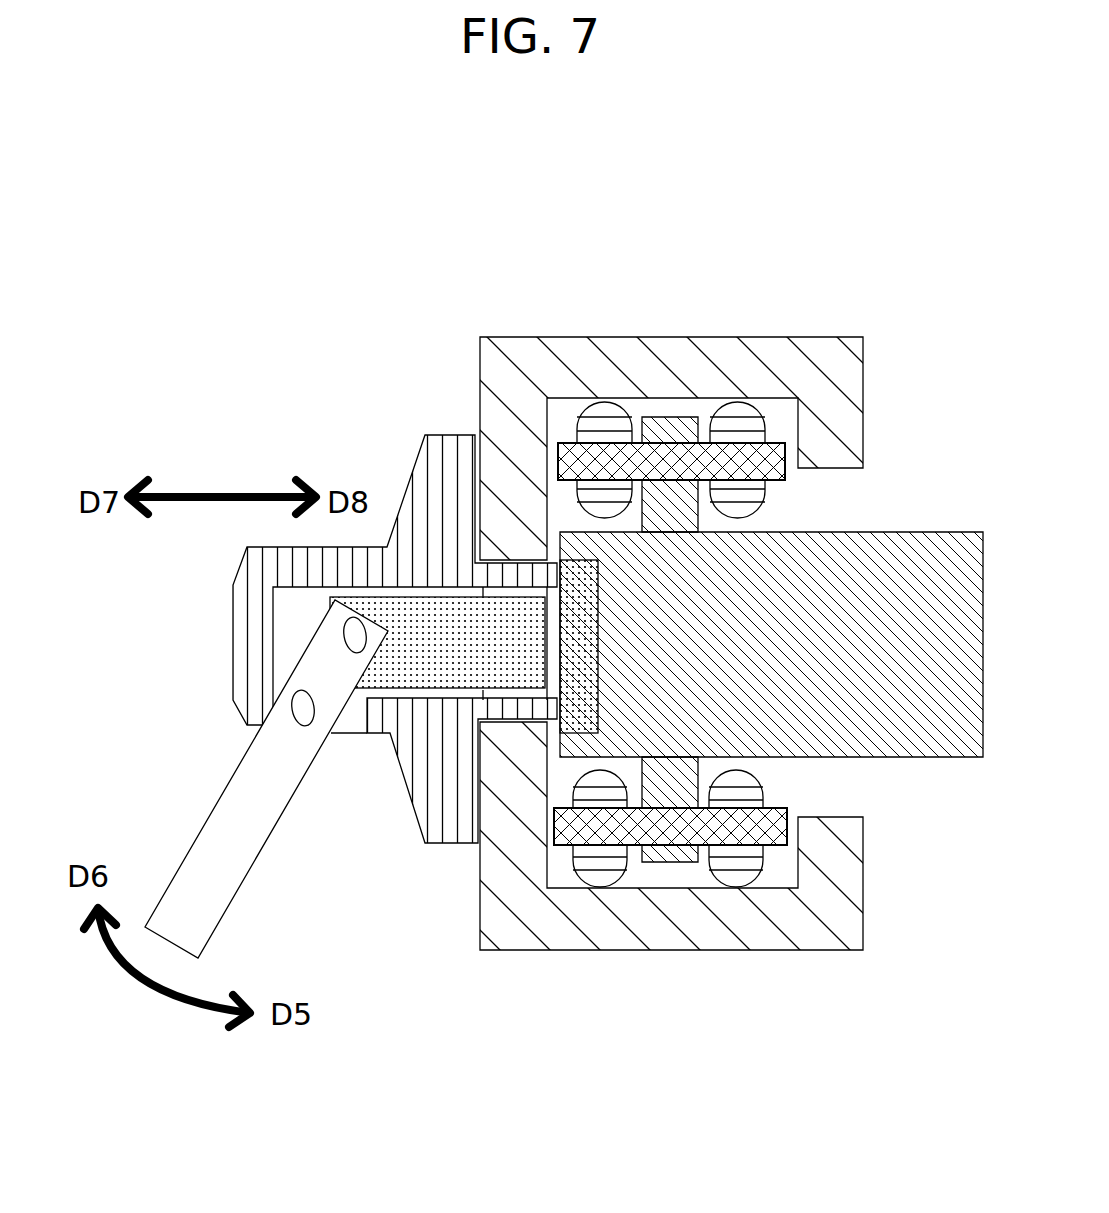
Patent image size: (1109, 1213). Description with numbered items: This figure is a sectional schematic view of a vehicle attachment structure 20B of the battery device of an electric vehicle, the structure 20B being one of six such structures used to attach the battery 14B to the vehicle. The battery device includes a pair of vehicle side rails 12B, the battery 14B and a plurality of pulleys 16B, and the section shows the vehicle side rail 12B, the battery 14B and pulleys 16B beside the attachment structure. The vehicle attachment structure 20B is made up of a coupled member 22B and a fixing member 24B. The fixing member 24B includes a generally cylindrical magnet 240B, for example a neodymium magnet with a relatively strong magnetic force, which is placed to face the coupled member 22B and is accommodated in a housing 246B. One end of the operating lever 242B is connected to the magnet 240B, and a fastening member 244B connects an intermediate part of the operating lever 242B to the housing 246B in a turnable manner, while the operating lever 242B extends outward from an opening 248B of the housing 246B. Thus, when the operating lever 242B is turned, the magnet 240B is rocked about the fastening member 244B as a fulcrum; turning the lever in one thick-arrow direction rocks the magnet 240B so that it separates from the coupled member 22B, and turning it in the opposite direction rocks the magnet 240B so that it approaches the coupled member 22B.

The vehicle attachment structure 20B is at (323, 275).
The fixing member 24B is at (318, 437).
The vehicle side rail 12B is at (512, 337).
The battery 14B is at (932, 530).
The pulley 16B is at (733, 400).
The coupled member 22B is at (550, 707).
The magnet 240B is at (447, 687).
The operating lever 242B is at (225, 792).
The fastening member 244B is at (293, 707).
The housing 246B is at (233, 613).
The opening 248B is at (352, 715).